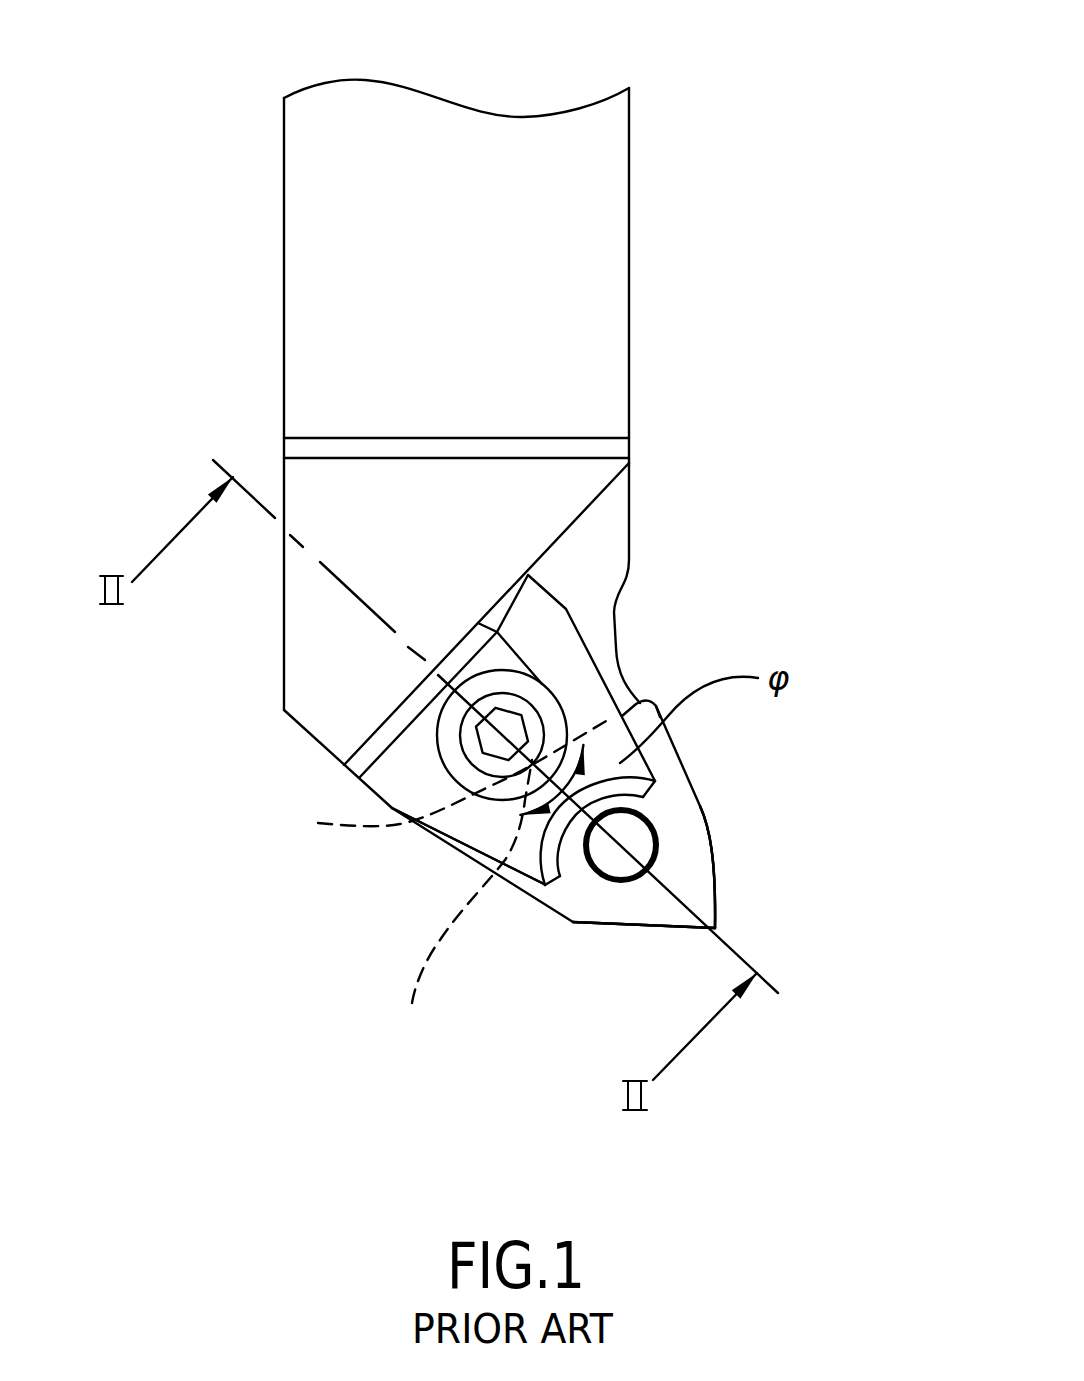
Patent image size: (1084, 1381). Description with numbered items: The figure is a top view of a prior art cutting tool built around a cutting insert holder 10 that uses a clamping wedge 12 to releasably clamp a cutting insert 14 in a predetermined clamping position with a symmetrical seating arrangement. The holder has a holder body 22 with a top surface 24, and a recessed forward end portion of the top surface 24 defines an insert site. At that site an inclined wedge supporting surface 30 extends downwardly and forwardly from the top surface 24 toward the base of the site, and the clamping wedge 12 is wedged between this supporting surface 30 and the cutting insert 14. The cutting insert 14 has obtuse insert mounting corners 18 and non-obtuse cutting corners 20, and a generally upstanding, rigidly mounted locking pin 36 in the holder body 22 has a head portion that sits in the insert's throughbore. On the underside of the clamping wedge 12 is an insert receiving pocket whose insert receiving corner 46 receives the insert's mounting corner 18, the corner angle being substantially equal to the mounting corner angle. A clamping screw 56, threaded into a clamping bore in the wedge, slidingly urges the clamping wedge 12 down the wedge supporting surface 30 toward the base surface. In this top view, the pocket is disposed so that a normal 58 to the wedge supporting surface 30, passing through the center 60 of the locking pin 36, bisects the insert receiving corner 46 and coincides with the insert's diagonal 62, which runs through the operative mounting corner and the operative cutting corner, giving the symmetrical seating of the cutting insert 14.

The cutting insert holder 10 is at (697, 50).
The holder body 22 is at (583, 331).
The top surface 24 is at (587, 392).
The wedge supporting surface 30 is at (583, 522).
The clamping wedge 12 is at (543, 631).
The clamping screw 56 is at (547, 675).
The cutting insert 14 is at (675, 800).
The center of the locking pin 60 is at (632, 850).
The normal 58 is at (350, 597).
The cutting corners 20 is at (473, 880).
The insert mounting corners 18 is at (592, 905).
The locking pin 36 is at (616, 880).
The diagonal 62 is at (655, 895).
The insert receiving corner 46 is at (456, 908).